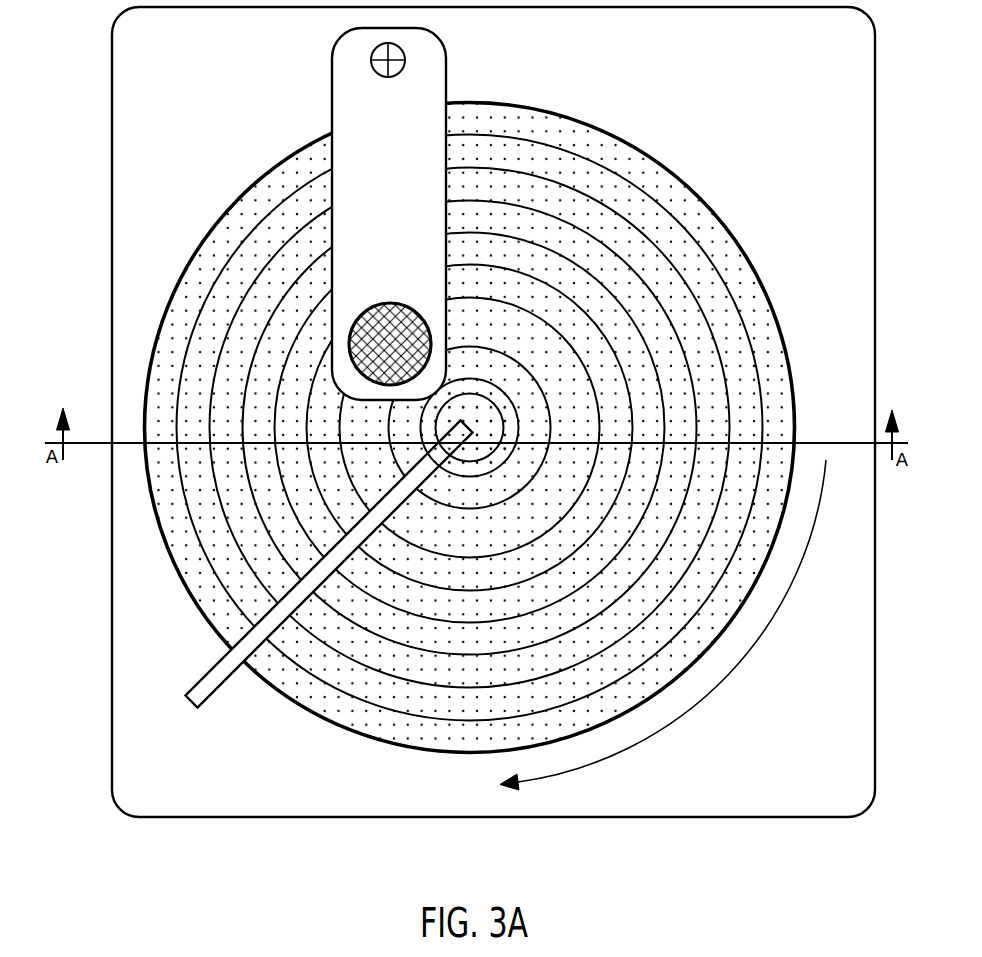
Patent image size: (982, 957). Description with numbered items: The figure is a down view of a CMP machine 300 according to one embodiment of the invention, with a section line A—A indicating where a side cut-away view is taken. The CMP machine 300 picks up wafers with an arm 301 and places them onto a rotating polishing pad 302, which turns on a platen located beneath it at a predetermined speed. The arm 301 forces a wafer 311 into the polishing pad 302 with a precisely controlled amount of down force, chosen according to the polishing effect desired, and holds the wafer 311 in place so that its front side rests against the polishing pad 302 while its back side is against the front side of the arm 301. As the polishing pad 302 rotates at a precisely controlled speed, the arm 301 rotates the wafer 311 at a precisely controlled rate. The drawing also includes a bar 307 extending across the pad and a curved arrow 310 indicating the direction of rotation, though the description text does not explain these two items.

The CMP machine 300 is at (127, 164).
The arm 301 is at (372, 130).
The polishing pad 302 is at (199, 242).
The rod / bar 307 is at (222, 685).
The rotation direction arrow 310 is at (743, 685).
The wafer 311 is at (378, 300).